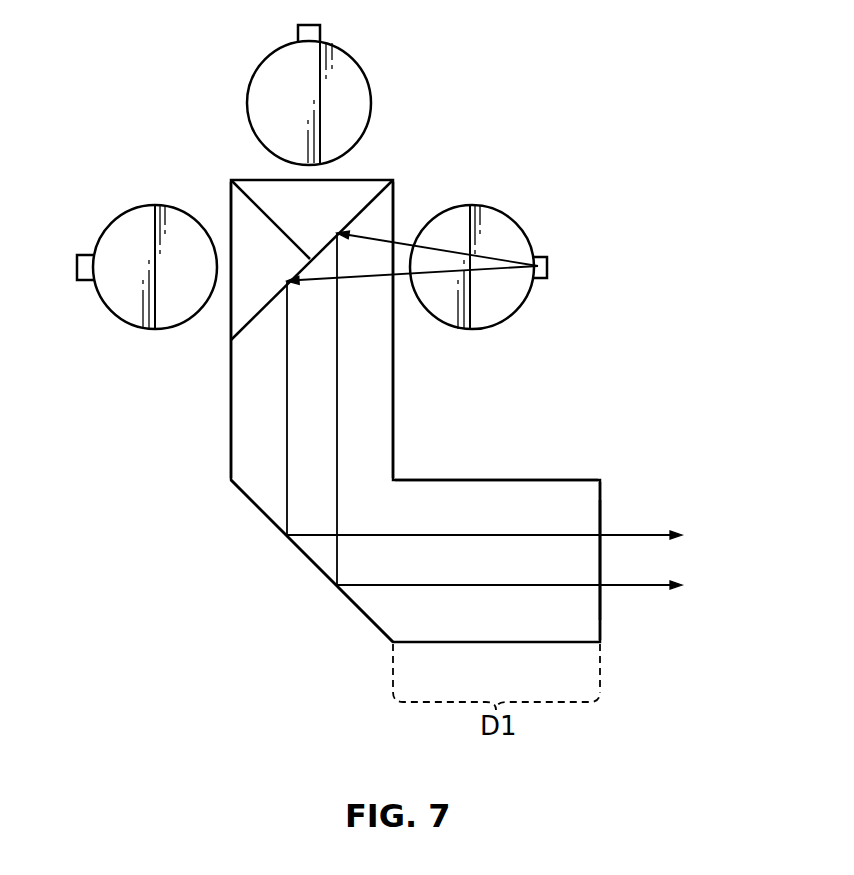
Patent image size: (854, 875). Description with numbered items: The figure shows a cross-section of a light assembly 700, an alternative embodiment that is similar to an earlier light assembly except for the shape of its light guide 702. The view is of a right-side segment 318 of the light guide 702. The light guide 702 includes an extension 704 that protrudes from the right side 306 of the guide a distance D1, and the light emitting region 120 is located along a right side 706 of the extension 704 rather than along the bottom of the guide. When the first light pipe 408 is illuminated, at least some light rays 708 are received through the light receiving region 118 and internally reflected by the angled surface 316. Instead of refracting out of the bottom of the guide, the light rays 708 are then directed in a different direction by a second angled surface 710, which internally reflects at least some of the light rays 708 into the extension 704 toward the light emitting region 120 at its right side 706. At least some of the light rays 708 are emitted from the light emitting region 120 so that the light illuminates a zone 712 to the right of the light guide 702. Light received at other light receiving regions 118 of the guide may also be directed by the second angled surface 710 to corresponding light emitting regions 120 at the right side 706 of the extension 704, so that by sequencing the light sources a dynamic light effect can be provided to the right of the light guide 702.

The light assembly 700 is at (121, 40).
The light receiving region 118 is at (395, 198).
The angled surface 316 is at (357, 213).
The light guide 702 is at (252, 405).
The right side 306 is at (395, 437).
The right-side segment 318 is at (405, 380).
The second angled surface 710 is at (267, 517).
The extension 704 is at (508, 497).
The light emitting region 120 is at (600, 488).
The right side 706 is at (600, 520).
The zone 712 is at (672, 564).
The first light pipe 408 is at (496, 240).
The light rays 708 is at (495, 278).